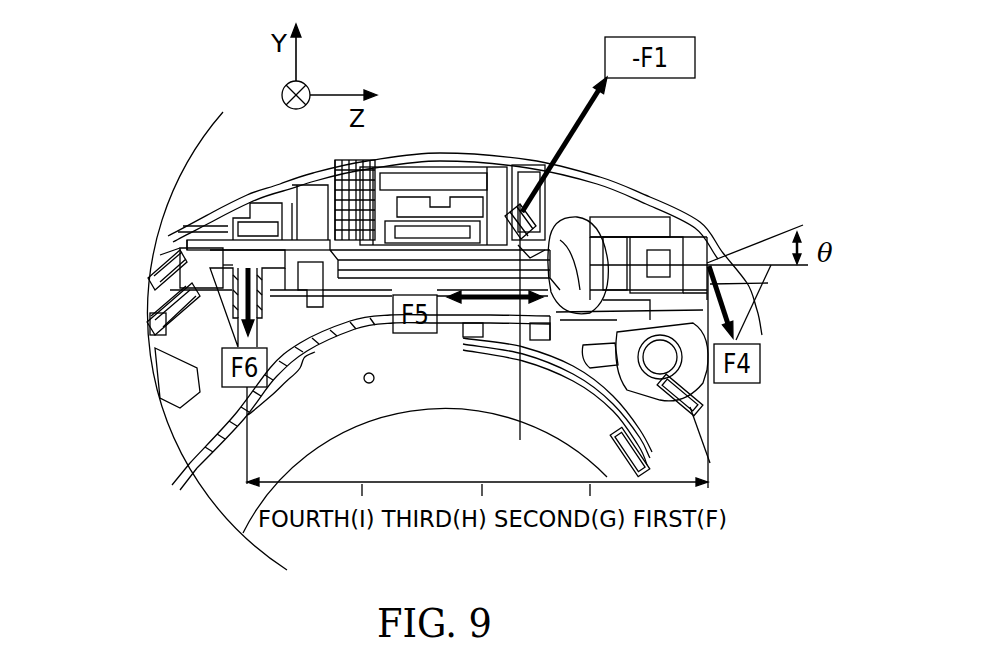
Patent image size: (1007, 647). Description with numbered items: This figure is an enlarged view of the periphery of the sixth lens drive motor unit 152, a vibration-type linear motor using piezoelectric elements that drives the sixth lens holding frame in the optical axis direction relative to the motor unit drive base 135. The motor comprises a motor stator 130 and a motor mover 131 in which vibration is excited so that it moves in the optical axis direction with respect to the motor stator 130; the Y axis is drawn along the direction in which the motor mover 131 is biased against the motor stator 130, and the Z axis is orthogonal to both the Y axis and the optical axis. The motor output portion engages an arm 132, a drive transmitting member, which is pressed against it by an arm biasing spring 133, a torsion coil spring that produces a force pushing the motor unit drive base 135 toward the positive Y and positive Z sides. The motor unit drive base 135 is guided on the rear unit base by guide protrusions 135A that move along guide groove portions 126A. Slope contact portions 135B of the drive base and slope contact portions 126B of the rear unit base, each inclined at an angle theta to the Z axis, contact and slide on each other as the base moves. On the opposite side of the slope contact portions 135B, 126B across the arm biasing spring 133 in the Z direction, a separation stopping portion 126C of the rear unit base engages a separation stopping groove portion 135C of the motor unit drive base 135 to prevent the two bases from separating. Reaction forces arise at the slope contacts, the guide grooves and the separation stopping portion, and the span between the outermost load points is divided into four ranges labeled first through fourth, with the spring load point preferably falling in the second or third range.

The sixth lens drive motor unit 152 is at (466, 46).
The motor stator 130 is at (273, 220).
The motor mover 131 is at (512, 180).
The arm 132 is at (570, 278).
The arm biasing spring 133 is at (516, 218).
The motor unit drive base 135 is at (197, 265).
The guide groove portions 126A is at (540, 300).
The guide protrusions 135A is at (696, 388).
The slope contact portions 126B is at (707, 263).
The slope contact portions 135B is at (691, 244).
The separation stopping portion 126C is at (227, 267).
The separation stopping groove portion 135C is at (156, 241).